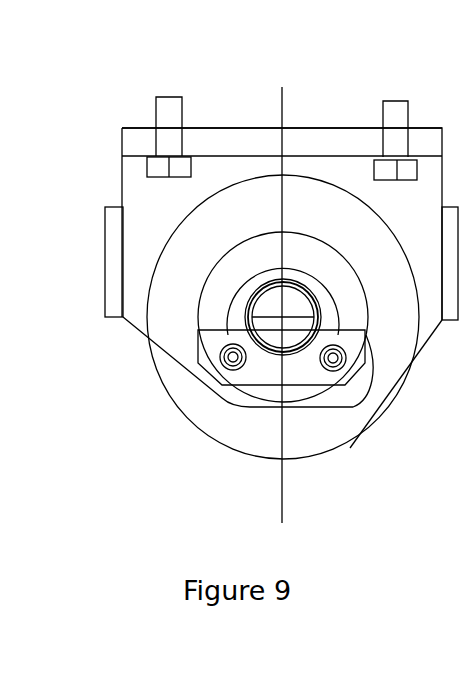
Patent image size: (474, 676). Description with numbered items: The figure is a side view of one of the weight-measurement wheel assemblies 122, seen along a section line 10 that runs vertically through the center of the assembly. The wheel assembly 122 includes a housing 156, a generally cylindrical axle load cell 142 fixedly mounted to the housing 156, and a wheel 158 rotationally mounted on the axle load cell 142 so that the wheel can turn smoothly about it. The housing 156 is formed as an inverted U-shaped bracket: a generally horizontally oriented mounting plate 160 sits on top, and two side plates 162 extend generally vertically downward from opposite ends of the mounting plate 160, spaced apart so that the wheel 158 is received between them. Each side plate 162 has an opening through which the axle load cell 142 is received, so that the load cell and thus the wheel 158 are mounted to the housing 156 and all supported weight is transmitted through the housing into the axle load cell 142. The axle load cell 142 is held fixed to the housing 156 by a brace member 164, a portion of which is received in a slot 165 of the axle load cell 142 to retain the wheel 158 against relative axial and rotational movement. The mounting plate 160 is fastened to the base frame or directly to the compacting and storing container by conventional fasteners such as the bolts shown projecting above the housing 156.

The section line 10 is at (282, 87).
The weight-measurement wheel assembly 122 is at (130, 457).
The axle load cell 142 is at (297, 351).
The housing 156 is at (137, 115).
The wheel 158 is at (372, 424).
The mounting plate 160 is at (122, 138).
The side plate 162 is at (122, 185).
The brace member 164 is at (194, 350).
The slot 165 is at (274, 337).